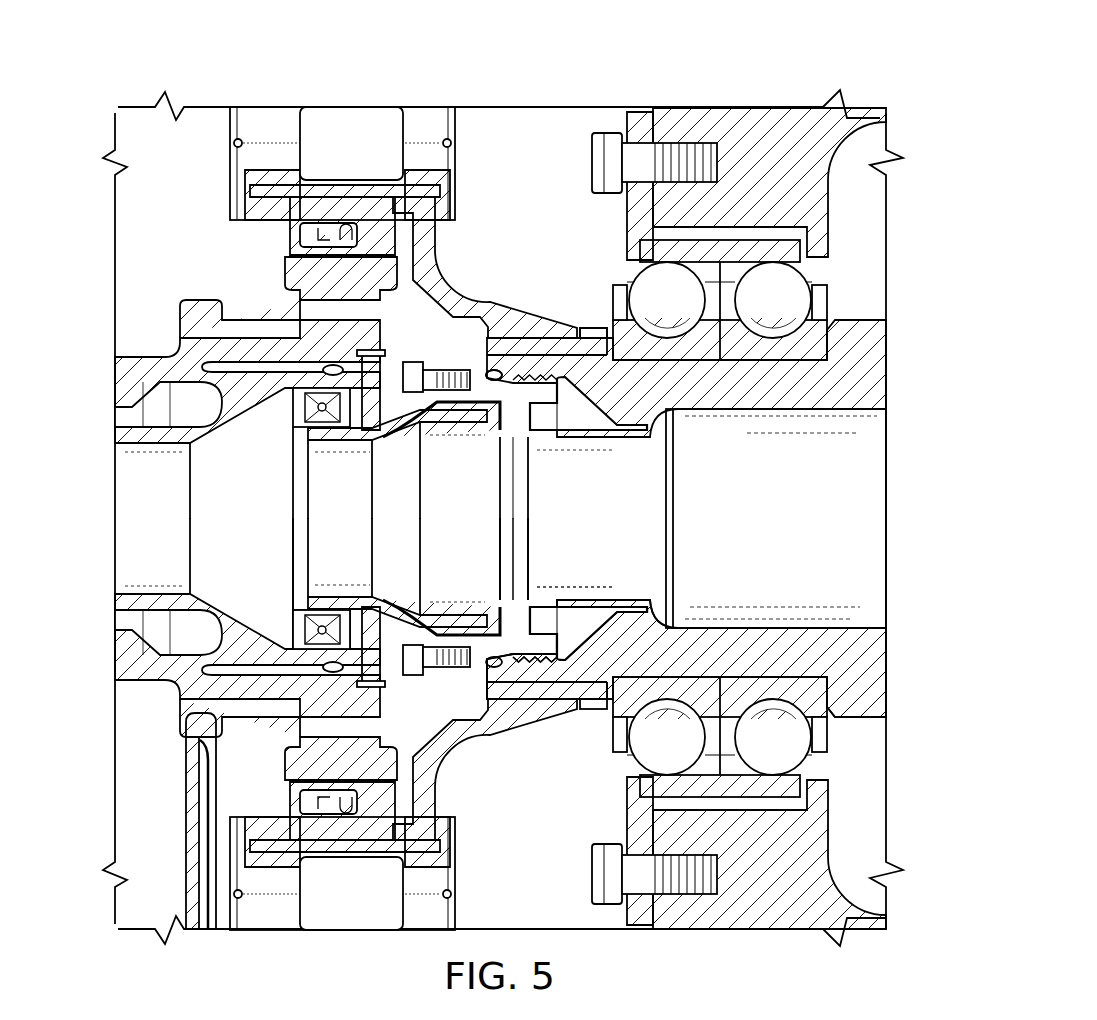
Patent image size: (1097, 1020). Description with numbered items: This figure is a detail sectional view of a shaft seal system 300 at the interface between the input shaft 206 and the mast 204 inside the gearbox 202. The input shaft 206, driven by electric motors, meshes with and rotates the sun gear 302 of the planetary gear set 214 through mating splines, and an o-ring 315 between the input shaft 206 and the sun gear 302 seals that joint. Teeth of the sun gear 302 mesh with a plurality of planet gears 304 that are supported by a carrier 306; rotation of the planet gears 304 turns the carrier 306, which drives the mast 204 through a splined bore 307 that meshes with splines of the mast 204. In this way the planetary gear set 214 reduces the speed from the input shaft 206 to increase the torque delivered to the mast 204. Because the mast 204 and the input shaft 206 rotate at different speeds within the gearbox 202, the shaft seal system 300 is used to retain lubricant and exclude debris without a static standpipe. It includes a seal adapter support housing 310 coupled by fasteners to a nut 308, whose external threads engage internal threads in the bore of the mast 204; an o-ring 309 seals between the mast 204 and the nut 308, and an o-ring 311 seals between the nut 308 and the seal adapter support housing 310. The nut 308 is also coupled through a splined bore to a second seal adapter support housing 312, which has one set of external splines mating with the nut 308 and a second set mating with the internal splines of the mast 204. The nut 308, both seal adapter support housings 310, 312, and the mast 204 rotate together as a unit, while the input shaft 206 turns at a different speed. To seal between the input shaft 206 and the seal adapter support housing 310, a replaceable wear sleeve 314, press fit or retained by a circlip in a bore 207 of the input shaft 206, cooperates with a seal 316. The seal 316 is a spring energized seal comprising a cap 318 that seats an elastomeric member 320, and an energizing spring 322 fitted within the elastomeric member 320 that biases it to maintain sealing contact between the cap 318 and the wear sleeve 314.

The gearbox 202 is at (797, 76).
The mast 204 is at (865, 635).
The input shaft 206 is at (133, 425).
The bore 207 is at (295, 660).
The planetary gear set 214 is at (340, 98).
The shaft seal system 300 is at (524, 742).
The sun gear 302 is at (322, 327).
The planet gears 304 is at (395, 768).
The carrier 306 is at (525, 305).
The splined bore 307 is at (567, 330).
The nut 308 is at (445, 410).
The o-ring 309 is at (503, 345).
The seal adapter support housing 310 is at (400, 442).
The o-ring 311 is at (445, 625).
The seal adapter support housing 312 is at (625, 430).
The wear sleeve 314 is at (300, 402).
The o-ring 315 is at (363, 363).
The seal 316 is at (328, 592).
The cap 318 is at (300, 428).
The elastomeric member 320 is at (308, 625).
The energizing spring 322 is at (330, 620).